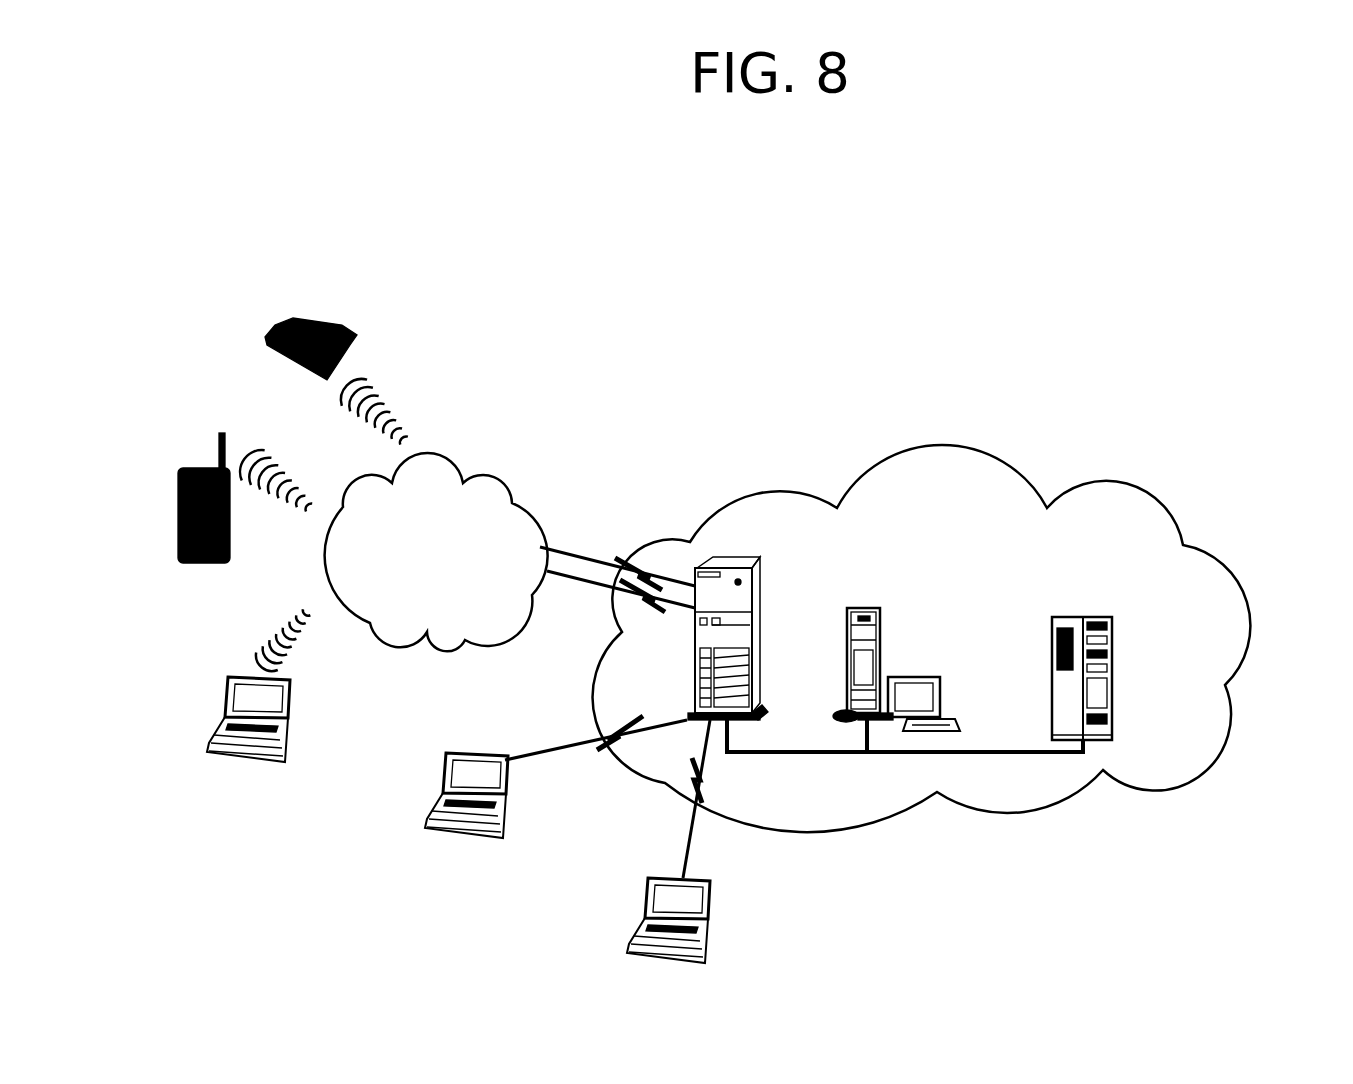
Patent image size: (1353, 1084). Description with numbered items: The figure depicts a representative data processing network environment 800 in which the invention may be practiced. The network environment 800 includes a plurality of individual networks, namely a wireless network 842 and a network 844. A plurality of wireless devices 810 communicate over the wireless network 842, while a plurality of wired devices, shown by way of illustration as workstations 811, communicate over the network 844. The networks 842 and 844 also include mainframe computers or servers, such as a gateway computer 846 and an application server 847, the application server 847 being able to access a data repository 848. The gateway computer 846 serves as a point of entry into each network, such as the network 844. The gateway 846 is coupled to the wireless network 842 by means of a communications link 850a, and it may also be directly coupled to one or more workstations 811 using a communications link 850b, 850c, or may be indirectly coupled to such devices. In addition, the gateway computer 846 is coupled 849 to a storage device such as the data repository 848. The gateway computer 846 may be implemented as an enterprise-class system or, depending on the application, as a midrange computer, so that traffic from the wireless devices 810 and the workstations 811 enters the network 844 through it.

The data processing network environment 800 is at (770, 257).
The wireless devices 810 is at (292, 585).
The workstations 811 is at (594, 842).
The wireless network 842 is at (436, 550).
The network 844 is at (922, 633).
The gateway computer 846 is at (754, 638).
The application server 847 is at (896, 657).
The data repository 848 is at (1111, 678).
The coupling 849 is at (905, 750).
The communications link 850a is at (624, 543).
The communications link 850b is at (596, 777).
The communications link 850c is at (724, 799).